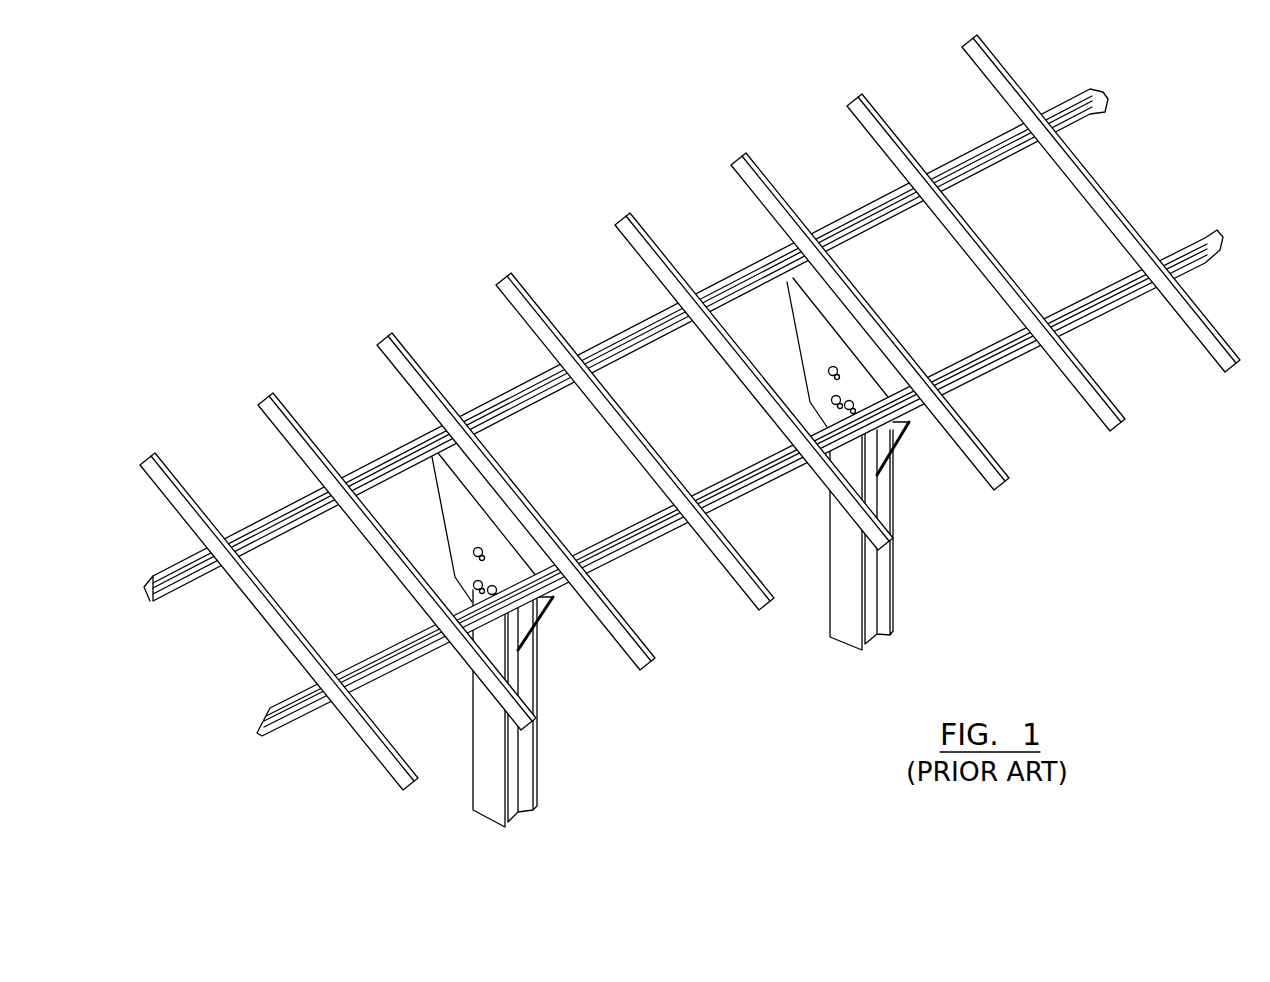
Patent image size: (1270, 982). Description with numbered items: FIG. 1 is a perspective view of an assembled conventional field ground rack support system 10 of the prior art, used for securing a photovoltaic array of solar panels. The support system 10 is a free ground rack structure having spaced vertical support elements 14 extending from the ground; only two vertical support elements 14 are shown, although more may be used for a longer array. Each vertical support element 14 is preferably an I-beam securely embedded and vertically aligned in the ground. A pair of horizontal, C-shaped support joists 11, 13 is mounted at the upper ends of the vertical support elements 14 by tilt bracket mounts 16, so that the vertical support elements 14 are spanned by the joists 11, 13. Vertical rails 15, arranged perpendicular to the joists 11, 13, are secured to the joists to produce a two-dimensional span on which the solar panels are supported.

The support system 10 is at (383, 245).
The support joist 11 is at (181, 591).
The support joist 13 is at (308, 718).
The vertical support element 14 is at (538, 770).
The vertical rail 15 is at (393, 778).
The tilt bracket mount 16 is at (460, 546).